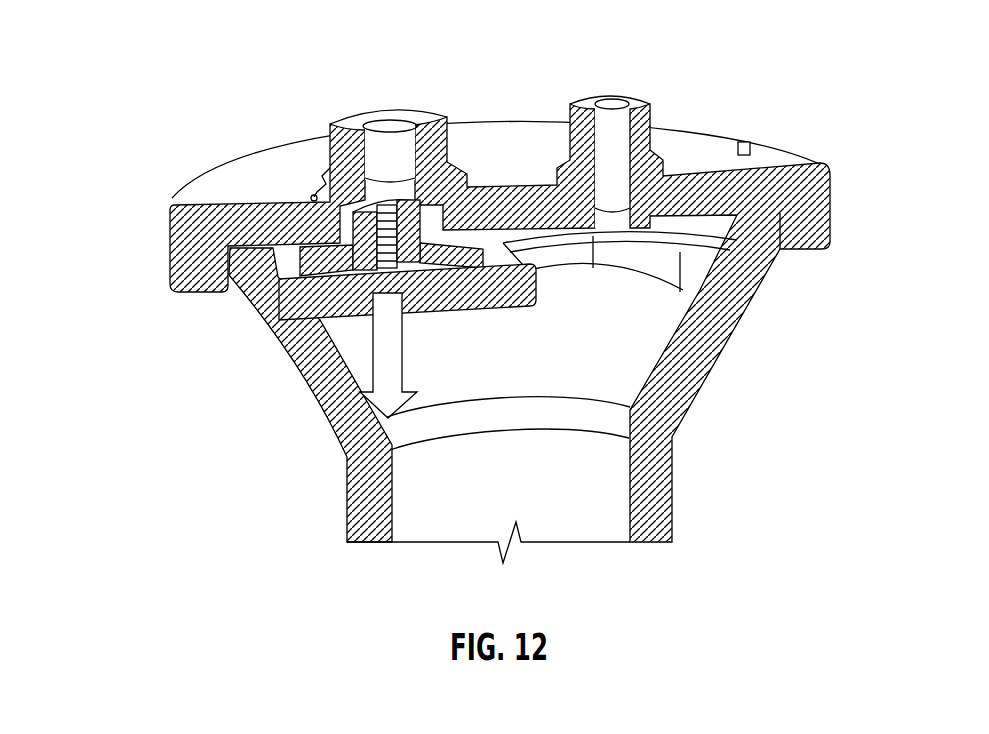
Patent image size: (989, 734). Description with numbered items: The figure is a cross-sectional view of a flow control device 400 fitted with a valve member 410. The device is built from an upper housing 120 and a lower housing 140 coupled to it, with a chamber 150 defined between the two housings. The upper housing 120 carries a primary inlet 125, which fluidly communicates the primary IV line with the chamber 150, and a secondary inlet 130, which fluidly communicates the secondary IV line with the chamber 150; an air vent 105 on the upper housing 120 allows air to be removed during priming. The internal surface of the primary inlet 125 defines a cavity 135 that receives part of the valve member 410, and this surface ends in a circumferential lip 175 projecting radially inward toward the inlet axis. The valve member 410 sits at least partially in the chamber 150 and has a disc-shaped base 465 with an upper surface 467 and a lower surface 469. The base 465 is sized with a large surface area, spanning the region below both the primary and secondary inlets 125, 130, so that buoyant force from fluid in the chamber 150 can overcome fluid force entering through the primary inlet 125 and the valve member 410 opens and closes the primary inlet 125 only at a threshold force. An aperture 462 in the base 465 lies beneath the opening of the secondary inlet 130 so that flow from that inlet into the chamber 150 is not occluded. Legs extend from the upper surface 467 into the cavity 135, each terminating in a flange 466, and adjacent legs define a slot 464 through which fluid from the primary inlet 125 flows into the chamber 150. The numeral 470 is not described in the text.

The flow control device 400 is at (129, 81).
The air vent 105 is at (745, 140).
The upper housing 120 is at (168, 240).
The primary inlet 125 is at (336, 118).
The secondary inlet 130 is at (640, 98).
The cavity 135 is at (312, 194).
The lower housing 140 is at (320, 416).
The chamber 150 is at (421, 474).
The circumferential lip 175 is at (338, 218).
The valve member 410 is at (278, 323).
The aperture 462 is at (390, 192).
The flow portion or slot 464 is at (738, 312).
The base 465 is at (262, 318).
The flange 466 is at (425, 195).
The upper surface 467 is at (395, 318).
The lower surface 469 is at (334, 326).
The post 470 is at (262, 312).